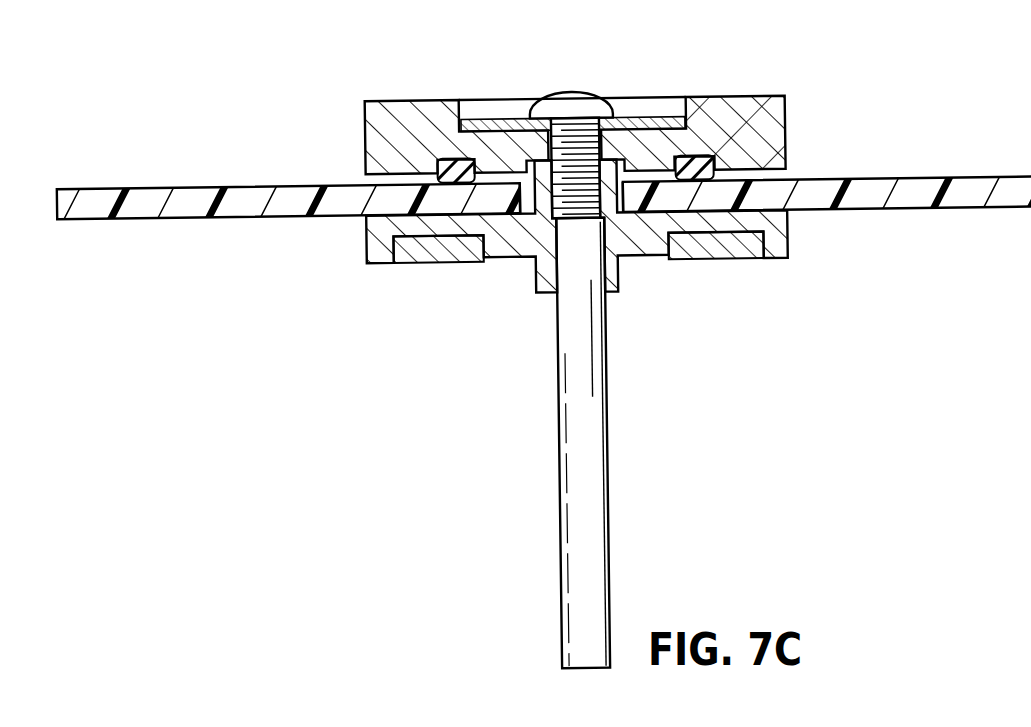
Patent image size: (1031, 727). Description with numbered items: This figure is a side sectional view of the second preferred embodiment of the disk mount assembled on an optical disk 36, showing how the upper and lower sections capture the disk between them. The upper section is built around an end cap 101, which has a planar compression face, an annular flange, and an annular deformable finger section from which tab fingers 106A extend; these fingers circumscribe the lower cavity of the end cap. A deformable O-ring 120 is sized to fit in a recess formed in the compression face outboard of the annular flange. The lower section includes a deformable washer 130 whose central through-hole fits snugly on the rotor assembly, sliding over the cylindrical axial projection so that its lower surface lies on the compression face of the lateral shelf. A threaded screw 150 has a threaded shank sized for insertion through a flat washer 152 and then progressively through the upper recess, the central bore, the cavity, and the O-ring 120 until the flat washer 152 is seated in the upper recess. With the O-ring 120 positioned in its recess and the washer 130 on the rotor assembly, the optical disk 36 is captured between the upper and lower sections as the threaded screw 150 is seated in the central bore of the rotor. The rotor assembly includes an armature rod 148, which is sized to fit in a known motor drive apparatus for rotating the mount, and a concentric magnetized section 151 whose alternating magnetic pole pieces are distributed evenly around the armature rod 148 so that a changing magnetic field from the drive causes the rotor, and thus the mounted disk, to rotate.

The panel / plate 36 is at (215, 214).
The end cap 101 is at (787, 125).
The tab fingers 106A is at (522, 218).
The deformable O-ring 120 is at (762, 96).
The deformable washer 130 is at (789, 236).
The armature rod 148 is at (607, 432).
The threaded screw 150 is at (557, 100).
The magnetized section 151 is at (422, 258).
The flat washer 152 is at (652, 117).